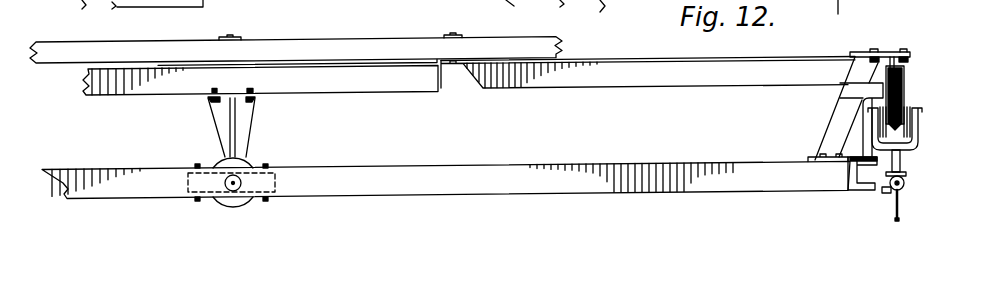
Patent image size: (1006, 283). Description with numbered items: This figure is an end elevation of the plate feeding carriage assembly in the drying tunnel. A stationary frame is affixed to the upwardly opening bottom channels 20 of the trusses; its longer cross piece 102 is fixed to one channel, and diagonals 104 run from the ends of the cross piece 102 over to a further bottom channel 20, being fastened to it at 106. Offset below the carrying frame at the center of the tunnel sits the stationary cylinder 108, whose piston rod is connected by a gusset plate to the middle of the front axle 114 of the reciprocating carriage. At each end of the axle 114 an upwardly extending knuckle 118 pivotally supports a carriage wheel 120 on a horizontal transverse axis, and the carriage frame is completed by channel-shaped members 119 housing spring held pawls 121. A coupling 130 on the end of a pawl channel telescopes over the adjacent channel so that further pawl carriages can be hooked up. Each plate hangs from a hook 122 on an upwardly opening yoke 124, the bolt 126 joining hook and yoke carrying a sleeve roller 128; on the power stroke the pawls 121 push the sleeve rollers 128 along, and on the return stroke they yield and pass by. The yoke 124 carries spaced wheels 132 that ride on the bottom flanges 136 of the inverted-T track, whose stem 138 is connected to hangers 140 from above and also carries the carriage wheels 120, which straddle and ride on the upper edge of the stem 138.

The bottom channel 20 is at (383, 50).
The longer cross piece 102 is at (373, 80).
The diagonals 104 is at (676, 85).
The fastening 106 is at (887, 52).
The stationary cylinder 108 is at (248, 160).
The front axle 114 is at (448, 182).
The knuckle 118 is at (835, 131).
The channel-shaped member 119 is at (853, 191).
The carriage wheel 120 is at (906, 78).
The pawl 121 is at (886, 194).
The hook 122 is at (902, 200).
The yoke 124 is at (920, 143).
The bolt 126 is at (904, 185).
The sleeve roller 128 is at (903, 160).
The coupling 130 is at (850, 166).
The wheels 132 is at (909, 107).
The bottom flanges 136 is at (917, 125).
The stem 138 is at (870, 121).
The hangers 140 is at (903, 67).